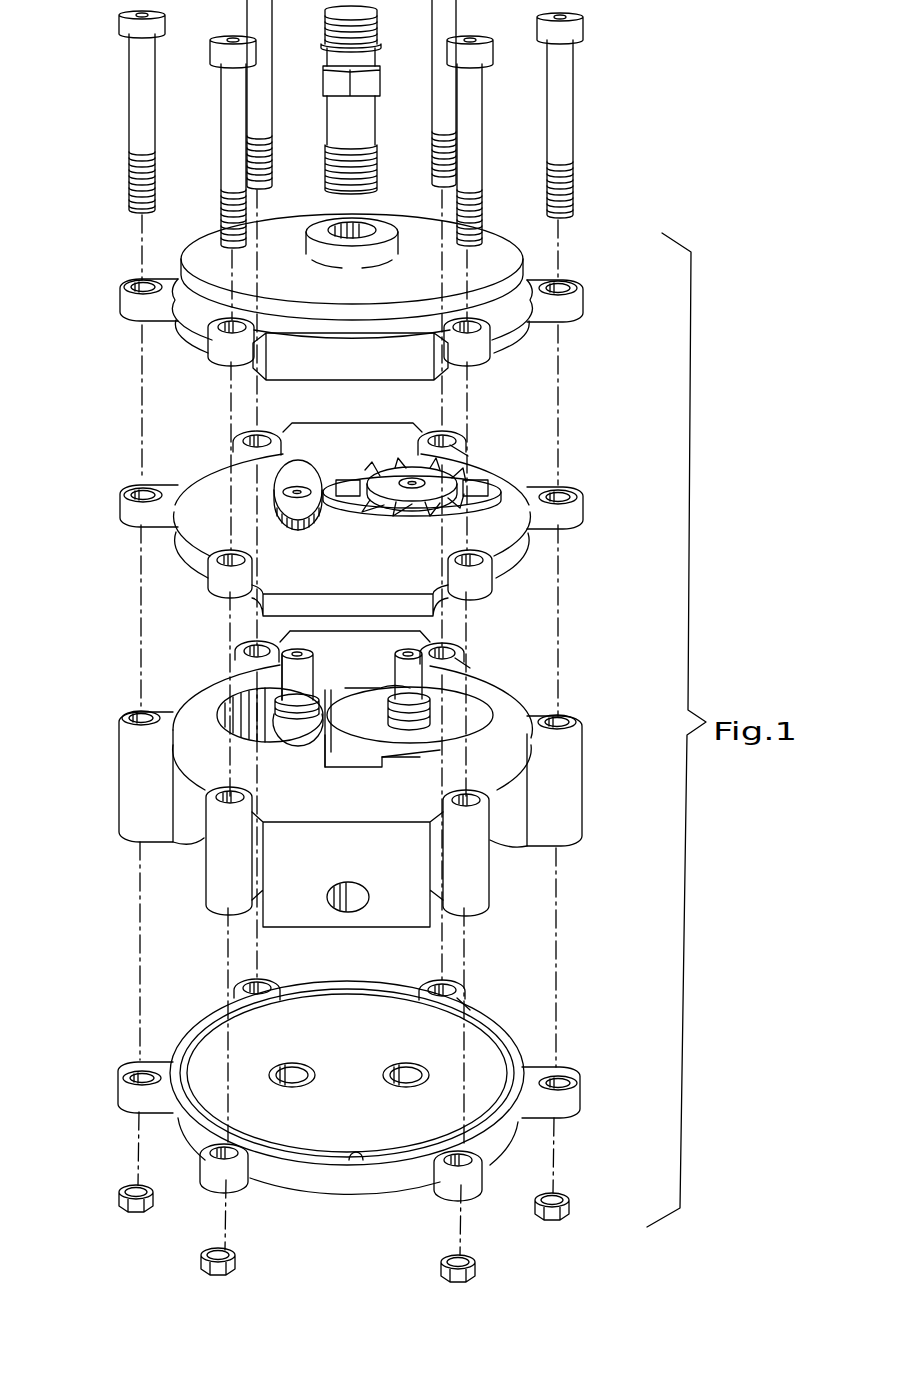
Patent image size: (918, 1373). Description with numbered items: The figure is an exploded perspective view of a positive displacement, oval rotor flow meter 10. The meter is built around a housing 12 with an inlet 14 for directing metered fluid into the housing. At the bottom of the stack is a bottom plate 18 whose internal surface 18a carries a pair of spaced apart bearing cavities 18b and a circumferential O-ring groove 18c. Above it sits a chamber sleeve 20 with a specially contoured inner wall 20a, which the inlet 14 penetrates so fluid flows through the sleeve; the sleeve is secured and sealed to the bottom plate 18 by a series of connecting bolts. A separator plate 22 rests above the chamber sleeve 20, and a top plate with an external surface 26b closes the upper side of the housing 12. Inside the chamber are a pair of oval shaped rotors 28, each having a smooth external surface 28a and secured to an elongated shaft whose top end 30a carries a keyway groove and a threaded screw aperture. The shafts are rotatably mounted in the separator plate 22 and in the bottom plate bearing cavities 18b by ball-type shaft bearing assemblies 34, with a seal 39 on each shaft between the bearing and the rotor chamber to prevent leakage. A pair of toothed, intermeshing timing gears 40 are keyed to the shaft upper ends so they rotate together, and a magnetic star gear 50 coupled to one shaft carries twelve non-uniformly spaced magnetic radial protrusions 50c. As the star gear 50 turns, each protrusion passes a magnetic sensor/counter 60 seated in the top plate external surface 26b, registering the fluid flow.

The flow meter 10 is at (105, 213).
The housing 12 is at (582, 755).
The inlet 14 is at (357, 902).
The bottom plate 18 is at (349, 1116).
The internal surface 18a is at (347, 1073).
The bearing cavities 18b is at (427, 1067).
The circumferential O-ring groove 18c is at (367, 1186).
The chamber sleeve 20 is at (354, 802).
The inner wall 20a is at (255, 733).
The separator plate 22 is at (612, 540).
The external surface 26b is at (351, 297).
The oval shaped rotors 28 is at (527, 737).
The external surface 28a is at (428, 749).
The top end 30a is at (293, 674).
The shaft bearing assembly 34 is at (309, 866).
The seal 39 is at (285, 748).
The timing gears 40 is at (292, 470).
The magnetic star gear 50 is at (428, 453).
The radial protrusions 50c is at (363, 475).
The magnetic sensor/counter 60 is at (365, 123).